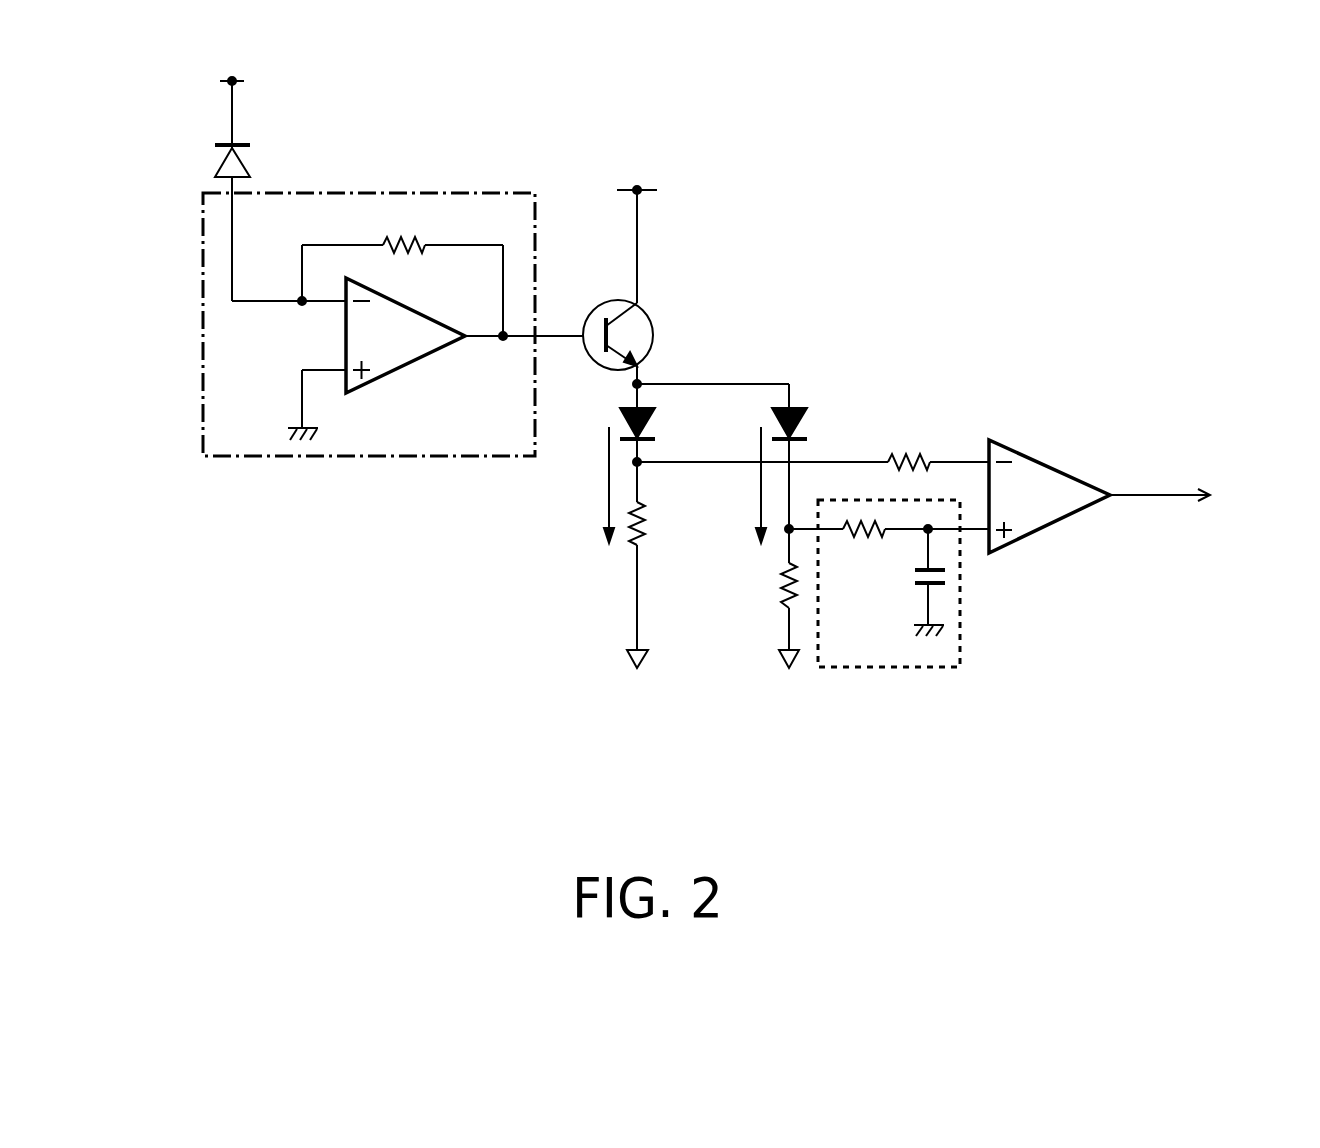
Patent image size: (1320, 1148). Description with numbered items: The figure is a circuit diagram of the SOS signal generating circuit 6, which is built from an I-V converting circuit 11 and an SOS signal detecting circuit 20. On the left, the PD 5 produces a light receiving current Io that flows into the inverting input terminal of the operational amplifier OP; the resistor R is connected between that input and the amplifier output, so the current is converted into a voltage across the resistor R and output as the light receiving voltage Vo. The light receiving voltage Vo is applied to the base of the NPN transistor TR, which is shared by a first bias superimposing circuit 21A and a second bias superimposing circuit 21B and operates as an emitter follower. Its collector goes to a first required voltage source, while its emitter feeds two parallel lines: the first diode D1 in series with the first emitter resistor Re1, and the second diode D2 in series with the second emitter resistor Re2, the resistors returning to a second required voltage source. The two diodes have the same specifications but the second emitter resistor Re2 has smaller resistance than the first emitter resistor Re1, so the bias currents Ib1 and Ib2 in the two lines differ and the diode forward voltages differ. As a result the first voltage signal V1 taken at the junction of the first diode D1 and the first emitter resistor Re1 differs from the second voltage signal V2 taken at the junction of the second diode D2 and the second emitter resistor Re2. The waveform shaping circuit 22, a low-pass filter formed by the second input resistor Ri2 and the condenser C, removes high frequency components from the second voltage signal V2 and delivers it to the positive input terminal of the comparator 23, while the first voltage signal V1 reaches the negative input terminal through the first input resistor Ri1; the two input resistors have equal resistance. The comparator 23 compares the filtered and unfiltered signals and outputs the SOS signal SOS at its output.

The PD 5 is at (213, 158).
The SOS signal generating circuit 6 is at (737, 208).
The I-V converting circuit 11 is at (202, 392).
The SOS signal detecting circuit 20 is at (858, 348).
The first bias superimposing circuit 21A is at (603, 530).
The second bias superimposing circuit 21B is at (746, 566).
The waveform shaping circuit 22 is at (903, 614).
The comparator 23 is at (1055, 465).
The resistor R is at (415, 225).
The operational amplifier OP is at (407, 368).
The NPN transistor TR is at (653, 333).
The first diode D1 is at (655, 425).
The second diode D2 is at (807, 425).
The first emitter resistor Re1 is at (647, 513).
The second emitter resistor Re2 is at (777, 593).
The first input resistor Ri1 is at (910, 445).
The second input resistor Ri2 is at (862, 540).
The condenser C is at (908, 580).
The light receiving current Io is at (233, 240).
The light receiving voltage Vo is at (557, 332).
The first voltage signal V1 is at (725, 460).
The second voltage signal V2 is at (808, 527).
The bias current Ib1 is at (568, 496).
The bias current Ib2 is at (752, 532).
The SOS signal SOS is at (1249, 495).